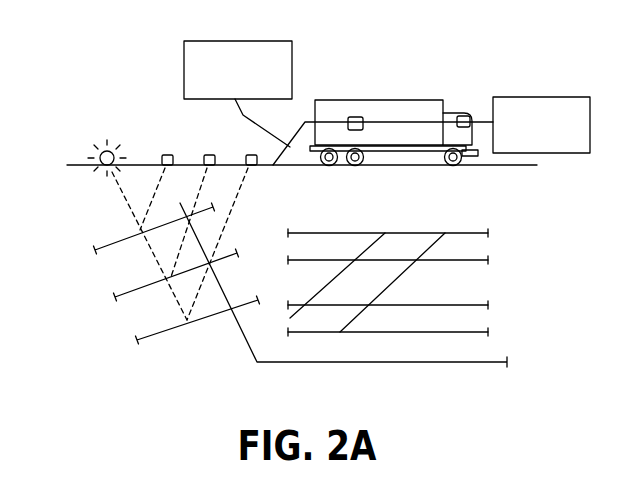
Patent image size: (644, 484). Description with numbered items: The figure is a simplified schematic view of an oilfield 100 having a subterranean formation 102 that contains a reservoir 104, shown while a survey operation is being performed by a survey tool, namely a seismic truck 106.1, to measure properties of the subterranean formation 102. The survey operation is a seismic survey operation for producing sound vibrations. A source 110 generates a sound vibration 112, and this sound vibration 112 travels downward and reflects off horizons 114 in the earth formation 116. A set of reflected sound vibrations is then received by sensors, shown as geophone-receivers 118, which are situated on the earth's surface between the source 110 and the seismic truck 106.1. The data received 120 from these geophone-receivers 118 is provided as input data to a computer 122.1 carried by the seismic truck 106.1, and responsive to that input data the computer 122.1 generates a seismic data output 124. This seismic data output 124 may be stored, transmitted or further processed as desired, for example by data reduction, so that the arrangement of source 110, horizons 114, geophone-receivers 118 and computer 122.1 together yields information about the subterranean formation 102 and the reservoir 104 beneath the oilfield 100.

The oilfield 100 is at (502, 67).
The subterranean formation 102 is at (473, 218).
The reservoir 104 is at (463, 292).
The seismic truck 106.1 is at (418, 100).
The source 110 is at (100, 153).
The sound vibration 112 is at (146, 211).
The horizons 114 is at (106, 244).
The earth formation 116 is at (244, 333).
The geophone-receivers 118 is at (251, 154).
The data received 120 is at (214, 40).
The computer 122.1 is at (356, 117).
The seismic data output 124 is at (561, 97).